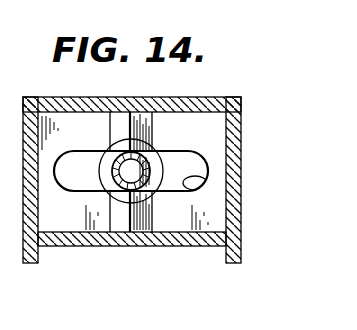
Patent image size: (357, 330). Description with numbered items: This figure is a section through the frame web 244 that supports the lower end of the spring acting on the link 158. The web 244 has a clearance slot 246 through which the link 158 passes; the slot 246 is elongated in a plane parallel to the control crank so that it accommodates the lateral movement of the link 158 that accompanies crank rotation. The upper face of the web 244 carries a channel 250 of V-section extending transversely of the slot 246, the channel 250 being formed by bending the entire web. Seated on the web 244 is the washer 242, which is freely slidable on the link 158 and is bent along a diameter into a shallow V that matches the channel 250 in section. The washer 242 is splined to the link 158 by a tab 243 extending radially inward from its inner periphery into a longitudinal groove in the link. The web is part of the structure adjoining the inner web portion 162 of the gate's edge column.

The frame web 244 is at (63, 218).
The inner web portion 162 is at (186, 241).
The channel 250 is at (130, 216).
The washer 242 is at (150, 164).
The link 158 is at (177, 151).
The tab 243 is at (112, 170).
The clearance slot 246 is at (205, 178).